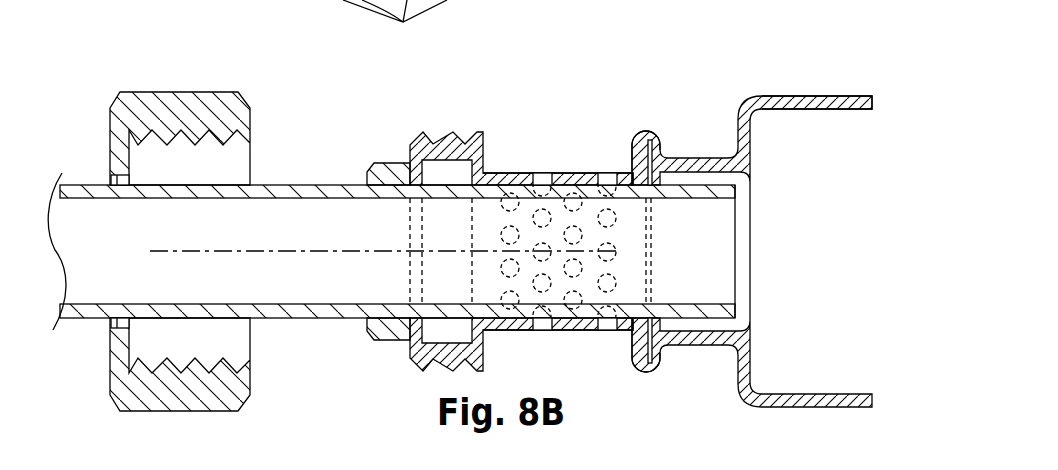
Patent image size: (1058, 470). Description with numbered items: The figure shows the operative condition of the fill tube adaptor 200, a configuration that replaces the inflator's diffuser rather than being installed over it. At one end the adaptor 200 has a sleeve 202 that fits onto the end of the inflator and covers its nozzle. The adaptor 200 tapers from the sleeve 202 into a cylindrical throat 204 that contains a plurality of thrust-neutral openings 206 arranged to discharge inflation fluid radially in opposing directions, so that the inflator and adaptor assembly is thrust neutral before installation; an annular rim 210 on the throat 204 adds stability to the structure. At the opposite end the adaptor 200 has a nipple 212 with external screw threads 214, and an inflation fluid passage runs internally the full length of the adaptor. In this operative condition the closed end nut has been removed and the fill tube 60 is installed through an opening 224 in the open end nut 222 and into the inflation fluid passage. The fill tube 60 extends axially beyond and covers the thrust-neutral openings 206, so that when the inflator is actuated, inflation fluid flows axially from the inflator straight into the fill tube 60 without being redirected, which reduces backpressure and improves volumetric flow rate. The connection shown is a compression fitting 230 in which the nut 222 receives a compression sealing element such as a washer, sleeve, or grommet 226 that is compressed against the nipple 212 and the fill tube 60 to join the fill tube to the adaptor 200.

The fill tube 60 is at (90, 190).
The adaptor 200 is at (783, 95).
The sleeve 202 is at (837, 95).
The cylindrical throat 204 is at (522, 171).
The thrust-neutral openings 206 is at (607, 177).
The annular rim 210 is at (650, 140).
The nipple 212 is at (412, 146).
The external screw threads 214 is at (467, 137).
The open end nut 222 is at (173, 118).
The opening 224 is at (118, 184).
The grommet 226 is at (372, 331).
The compression fitting 230 is at (105, 82).